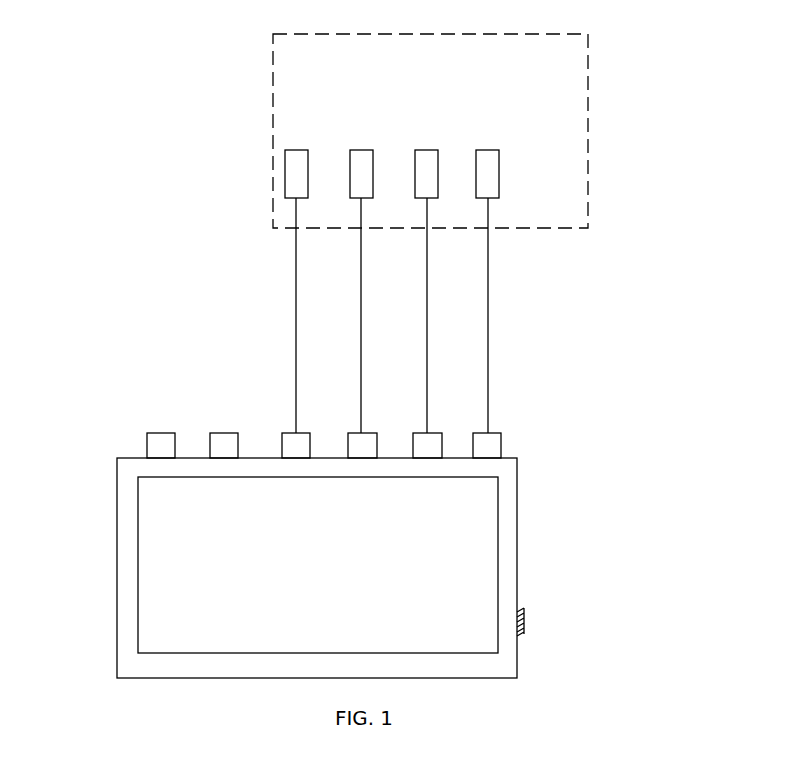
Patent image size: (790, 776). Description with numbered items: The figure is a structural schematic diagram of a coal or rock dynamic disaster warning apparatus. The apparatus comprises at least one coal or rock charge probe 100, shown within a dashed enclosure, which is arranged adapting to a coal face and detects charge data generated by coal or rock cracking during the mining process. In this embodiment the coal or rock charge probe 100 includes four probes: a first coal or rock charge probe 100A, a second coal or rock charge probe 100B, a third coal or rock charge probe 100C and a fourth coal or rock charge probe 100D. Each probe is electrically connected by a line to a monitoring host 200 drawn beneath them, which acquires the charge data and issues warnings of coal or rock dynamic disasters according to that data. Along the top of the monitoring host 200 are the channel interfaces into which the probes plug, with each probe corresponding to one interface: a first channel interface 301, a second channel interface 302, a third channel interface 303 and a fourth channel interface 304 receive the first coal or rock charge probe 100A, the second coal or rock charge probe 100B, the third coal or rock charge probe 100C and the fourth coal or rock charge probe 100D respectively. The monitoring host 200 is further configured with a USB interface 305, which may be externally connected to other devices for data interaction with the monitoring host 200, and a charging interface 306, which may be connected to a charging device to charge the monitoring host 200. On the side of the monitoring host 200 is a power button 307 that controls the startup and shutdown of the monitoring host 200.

The coal or rock charge probe 100 is at (468, 131).
The first coal or rock charge probe 100A is at (335, 238).
The second coal or rock charge probe 100B is at (402, 238).
The third coal or rock charge probe 100C is at (467, 238).
The fourth coal or rock charge probe 100D is at (527, 238).
The monitoring host 200 is at (384, 523).
The first channel interface 301 is at (187, 329).
The second channel interface 302 is at (221, 311).
The third channel interface 303 is at (530, 353).
The fourth channel interface 304 is at (562, 384).
The USB interface 305 is at (150, 359).
The charging interface 306 is at (116, 388).
The power button 307 is at (602, 567).